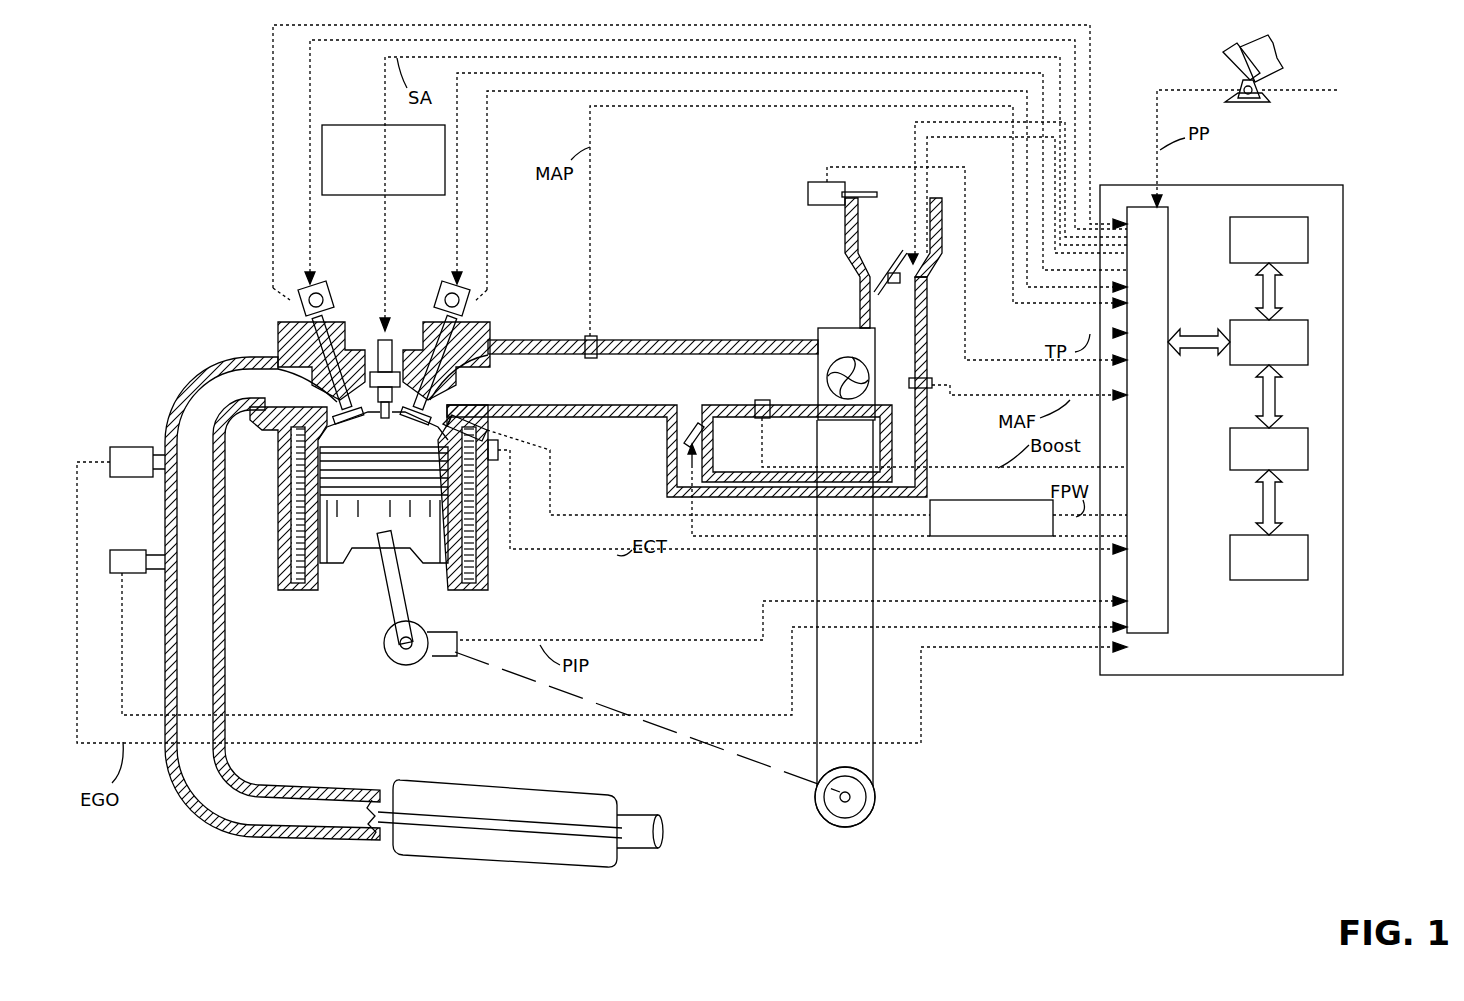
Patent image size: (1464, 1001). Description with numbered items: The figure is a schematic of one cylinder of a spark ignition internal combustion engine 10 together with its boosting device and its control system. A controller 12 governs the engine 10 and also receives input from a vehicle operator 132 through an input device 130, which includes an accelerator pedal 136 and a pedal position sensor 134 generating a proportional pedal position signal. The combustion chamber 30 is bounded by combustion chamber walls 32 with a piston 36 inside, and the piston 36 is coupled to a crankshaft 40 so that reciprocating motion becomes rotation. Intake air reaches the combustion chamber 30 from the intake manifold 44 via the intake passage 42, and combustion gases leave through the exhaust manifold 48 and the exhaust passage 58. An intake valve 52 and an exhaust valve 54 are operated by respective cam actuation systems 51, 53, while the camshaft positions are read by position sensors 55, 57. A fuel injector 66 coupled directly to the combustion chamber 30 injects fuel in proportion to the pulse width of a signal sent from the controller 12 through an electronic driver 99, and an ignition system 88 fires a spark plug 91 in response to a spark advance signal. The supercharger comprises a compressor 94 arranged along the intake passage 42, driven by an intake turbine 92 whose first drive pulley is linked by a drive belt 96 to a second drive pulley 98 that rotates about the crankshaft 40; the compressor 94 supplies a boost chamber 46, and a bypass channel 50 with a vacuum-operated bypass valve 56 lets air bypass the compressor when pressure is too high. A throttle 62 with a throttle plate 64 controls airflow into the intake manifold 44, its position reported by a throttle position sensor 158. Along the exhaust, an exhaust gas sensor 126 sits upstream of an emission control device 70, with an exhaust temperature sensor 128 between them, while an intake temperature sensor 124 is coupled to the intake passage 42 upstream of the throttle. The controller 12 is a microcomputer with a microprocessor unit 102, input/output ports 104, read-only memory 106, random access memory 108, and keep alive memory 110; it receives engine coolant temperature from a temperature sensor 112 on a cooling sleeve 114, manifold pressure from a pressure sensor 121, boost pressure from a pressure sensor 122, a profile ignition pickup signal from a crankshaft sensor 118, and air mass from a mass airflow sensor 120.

The engine 10 is at (203, 270).
The controller 12 is at (1264, 413).
The combustion chamber 30 is at (307, 530).
The combustion chamber walls 32 is at (323, 580).
The piston 36 is at (367, 535).
The crankshaft 40 is at (393, 663).
The intake passage 42 is at (902, 245).
The intake manifold 44 is at (546, 397).
The boost chamber 46 is at (794, 389).
The exhaust manifold 48 is at (246, 402).
The bypass channel 50 is at (910, 455).
The cam actuation system 51 is at (440, 286).
The intake valve 52 is at (427, 397).
The cam actuation system 53 is at (319, 289).
The exhaust valve 54 is at (345, 405).
The position sensor 55 is at (470, 312).
The bypass valve 56 is at (683, 447).
The position sensor 57 is at (297, 306).
The exhaust passage 58 is at (204, 664).
The throttle 62 is at (881, 252).
The throttle plate 64 is at (860, 290).
The fuel injector 66 is at (493, 433).
The emission control device 70 is at (500, 783).
The ignition system 88 is at (336, 125).
The spark plug 91 is at (388, 335).
The intake turbine 92 is at (846, 400).
The compressor 94 is at (877, 337).
The drive belt 96 is at (873, 772).
The second drive pulley 98 is at (870, 817).
The electronic driver 99 is at (1040, 528).
The microprocessor unit 102 is at (1308, 335).
The input/output ports 104 is at (1182, 217).
The read-only memory 106 is at (1308, 238).
The random access memory 108 is at (1308, 445).
The keep alive memory 110 is at (1308, 555).
The temperature sensor 112 is at (500, 455).
The cooling sleeve 114 is at (480, 572).
The crankshaft sensor 118 is at (430, 657).
The mass airflow sensor 120 is at (929, 388).
The pressure sensor 121 is at (588, 336).
The pressure sensor 122 is at (760, 420).
The intake temperature sensor 124 is at (826, 182).
The exhaust gas sensor 126 is at (130, 447).
The exhaust temperature sensor 128 is at (132, 550).
The input device 130 is at (1198, 40).
The vehicle operator 132 is at (1290, 55).
The pedal position sensor 134 is at (1272, 96).
The accelerator pedal 136 is at (1228, 78).
The throttle position sensor 158 is at (927, 285).